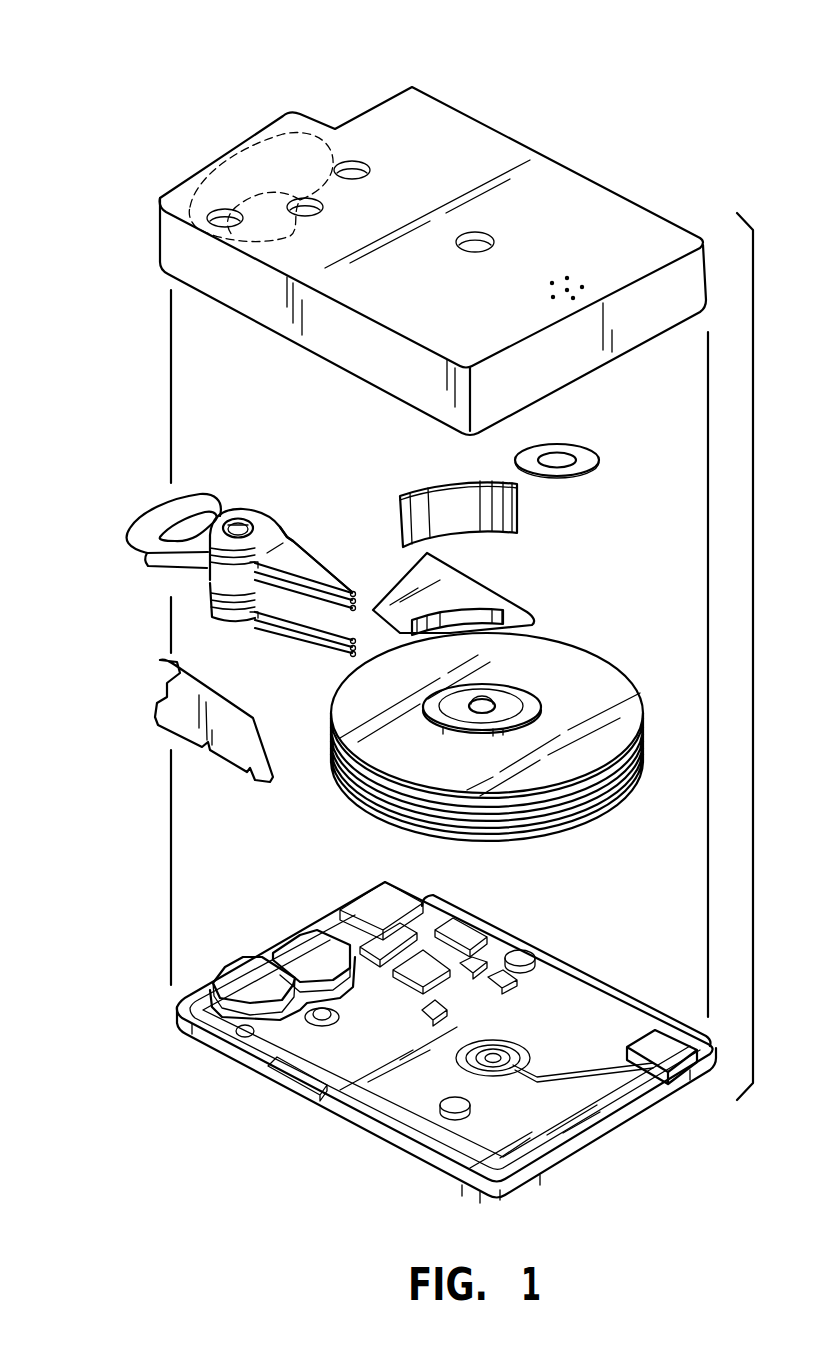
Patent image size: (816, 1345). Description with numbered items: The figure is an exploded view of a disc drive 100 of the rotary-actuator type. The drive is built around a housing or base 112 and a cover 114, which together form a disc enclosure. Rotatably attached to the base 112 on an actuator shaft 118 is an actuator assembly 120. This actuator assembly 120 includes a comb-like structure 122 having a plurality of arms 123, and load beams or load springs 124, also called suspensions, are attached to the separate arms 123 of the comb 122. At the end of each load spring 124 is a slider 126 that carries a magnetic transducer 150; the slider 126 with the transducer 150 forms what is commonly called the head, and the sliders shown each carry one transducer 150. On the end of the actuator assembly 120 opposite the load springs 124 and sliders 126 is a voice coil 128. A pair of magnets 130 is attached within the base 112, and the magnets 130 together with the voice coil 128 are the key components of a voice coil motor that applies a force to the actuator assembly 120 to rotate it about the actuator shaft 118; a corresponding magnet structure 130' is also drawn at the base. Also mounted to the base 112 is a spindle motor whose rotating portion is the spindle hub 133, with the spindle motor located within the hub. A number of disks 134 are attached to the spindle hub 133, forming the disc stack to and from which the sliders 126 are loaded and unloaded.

The disc drive 100 is at (572, 88).
The base 112 is at (612, 1013).
The cover 114 is at (592, 202).
The actuator shaft 118 is at (240, 520).
The actuator assembly 120 is at (192, 573).
The comb-like structure 122 is at (263, 628).
The arms 123 is at (293, 533).
The load springs 124 is at (308, 567).
The slider 126 is at (350, 593).
The voice coil 128 is at (148, 527).
The pair of magnets 130 is at (253, 166).
The raised features on base 130' is at (280, 961).
The spindle hub 133 is at (497, 697).
The disks 134 is at (610, 683).
The magnetic transducer 150 is at (355, 593).